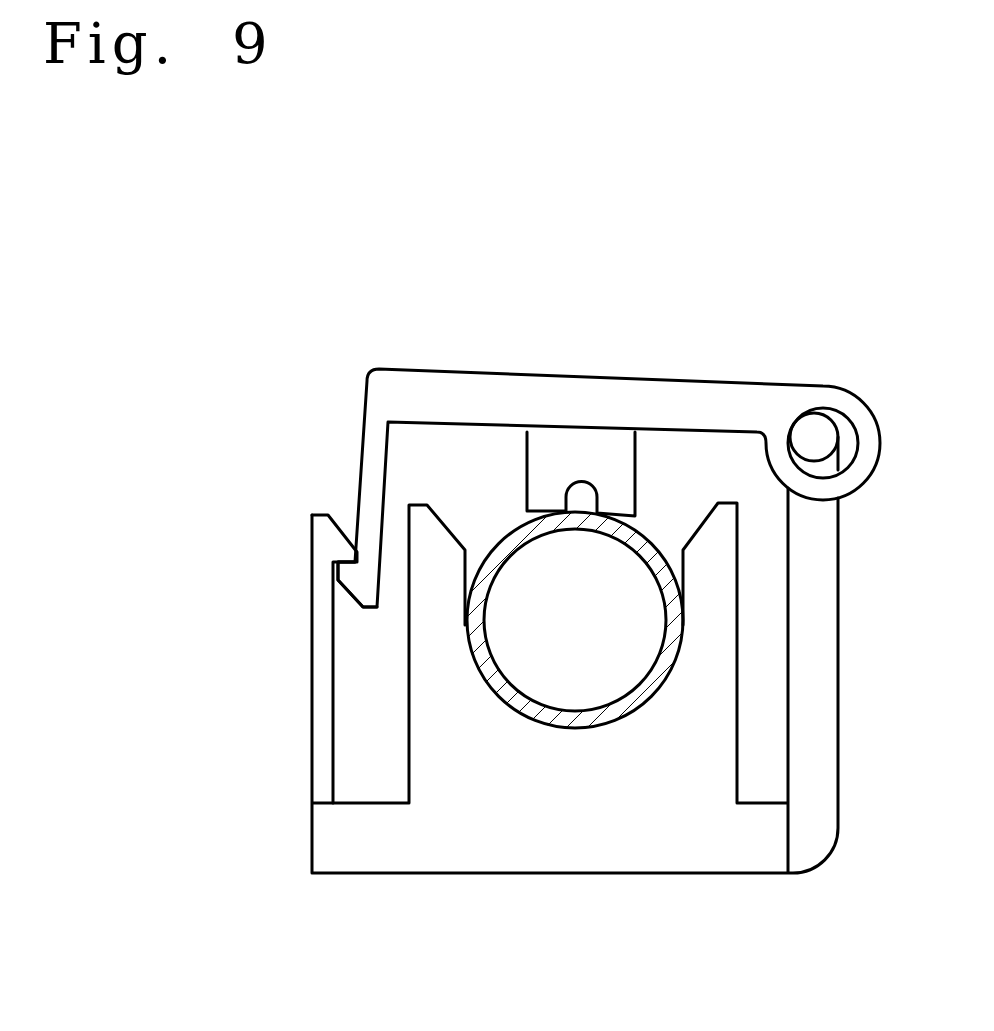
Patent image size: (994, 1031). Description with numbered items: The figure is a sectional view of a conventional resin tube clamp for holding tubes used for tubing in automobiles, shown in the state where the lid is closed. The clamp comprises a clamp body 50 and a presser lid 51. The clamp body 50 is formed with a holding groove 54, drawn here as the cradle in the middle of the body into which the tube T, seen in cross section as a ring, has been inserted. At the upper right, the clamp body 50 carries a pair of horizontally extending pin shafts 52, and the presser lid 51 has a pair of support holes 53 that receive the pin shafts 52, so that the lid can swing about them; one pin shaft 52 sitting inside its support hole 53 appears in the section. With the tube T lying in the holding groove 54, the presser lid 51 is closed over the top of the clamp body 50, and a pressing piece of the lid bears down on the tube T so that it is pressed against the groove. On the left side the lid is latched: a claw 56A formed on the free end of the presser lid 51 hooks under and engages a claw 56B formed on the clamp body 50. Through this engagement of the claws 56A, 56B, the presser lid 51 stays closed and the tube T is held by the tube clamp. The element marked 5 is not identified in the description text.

The clamp body 50 is at (563, 837).
The presser lid 51 is at (578, 407).
The pin shaft 52 is at (812, 433).
The support hole 53 is at (852, 433).
The holding groove 54 is at (510, 698).
The claw 56A is at (362, 588).
The claw 56B is at (333, 552).
The pressing block 5 is at (628, 450).
The tube T is at (505, 530).